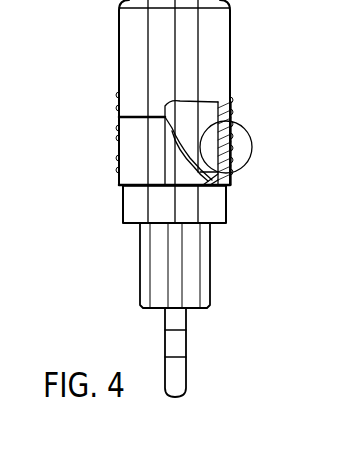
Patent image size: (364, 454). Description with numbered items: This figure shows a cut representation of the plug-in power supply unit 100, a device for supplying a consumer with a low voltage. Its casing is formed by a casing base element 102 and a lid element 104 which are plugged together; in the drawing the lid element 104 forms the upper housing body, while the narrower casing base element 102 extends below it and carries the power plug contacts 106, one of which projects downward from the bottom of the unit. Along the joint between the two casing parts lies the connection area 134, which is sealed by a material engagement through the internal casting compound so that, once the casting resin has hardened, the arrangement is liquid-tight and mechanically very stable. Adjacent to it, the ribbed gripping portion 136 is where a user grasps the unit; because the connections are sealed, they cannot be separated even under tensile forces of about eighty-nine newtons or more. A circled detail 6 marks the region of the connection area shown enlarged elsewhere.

The power supply unit 100 is at (77, 253).
The lid element 104 is at (230, 40).
The connection area 134 is at (119, 117).
The gripping portion 136 is at (119, 140).
The detail region 6 is at (250, 126).
The casing base element 102 is at (210, 265).
The power plug contacts 106 is at (186, 372).